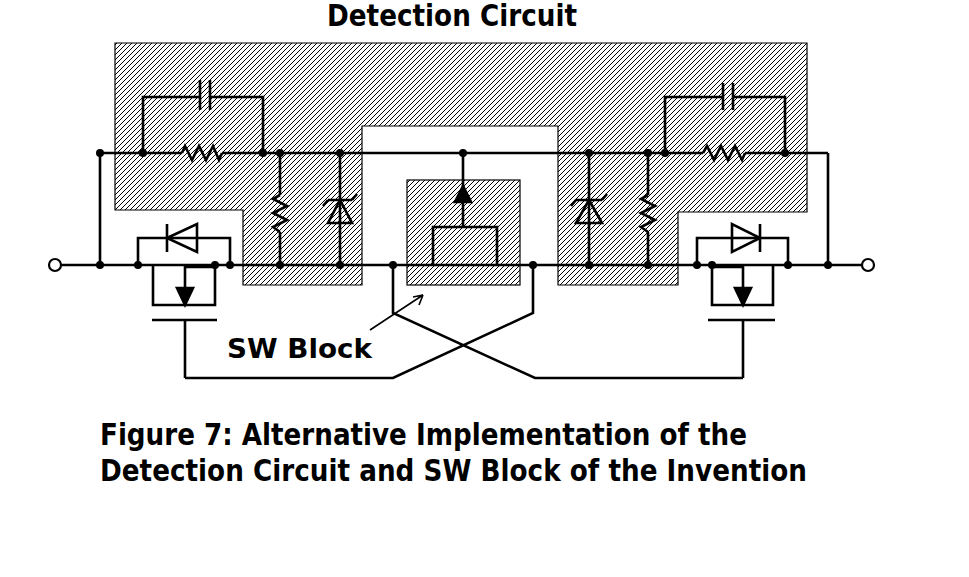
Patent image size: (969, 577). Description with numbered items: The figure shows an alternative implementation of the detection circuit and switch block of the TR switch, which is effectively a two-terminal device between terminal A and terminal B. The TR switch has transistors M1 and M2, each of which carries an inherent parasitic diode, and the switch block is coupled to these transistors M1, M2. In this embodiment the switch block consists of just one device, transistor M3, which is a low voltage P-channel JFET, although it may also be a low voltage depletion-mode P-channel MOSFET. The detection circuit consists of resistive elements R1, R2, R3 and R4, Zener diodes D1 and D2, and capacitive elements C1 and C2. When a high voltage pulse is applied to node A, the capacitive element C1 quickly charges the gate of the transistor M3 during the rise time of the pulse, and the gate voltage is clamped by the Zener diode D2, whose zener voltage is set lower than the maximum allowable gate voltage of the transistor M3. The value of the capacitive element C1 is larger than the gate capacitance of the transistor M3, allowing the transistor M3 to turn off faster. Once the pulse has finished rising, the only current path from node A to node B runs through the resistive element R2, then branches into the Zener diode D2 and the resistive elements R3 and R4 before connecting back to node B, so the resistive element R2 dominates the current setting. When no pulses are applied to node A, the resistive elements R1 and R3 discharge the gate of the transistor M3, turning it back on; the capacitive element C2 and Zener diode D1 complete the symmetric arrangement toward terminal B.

The terminal A is at (45, 266).
The terminal B is at (880, 266).
The transistor M1 is at (171, 301).
The transistor M2 is at (755, 301).
The transistor M3 is at (465, 223).
The capacitive element C1 is at (203, 108).
The capacitive element C2 is at (725, 108).
The resistive element R1 is at (266, 209).
The resistive element R2 is at (202, 169).
The resistive element R3 is at (661, 209).
The resistive element R4 is at (724, 169).
The Zener diode D1 is at (329, 209).
The Zener diode D2 is at (600, 209).